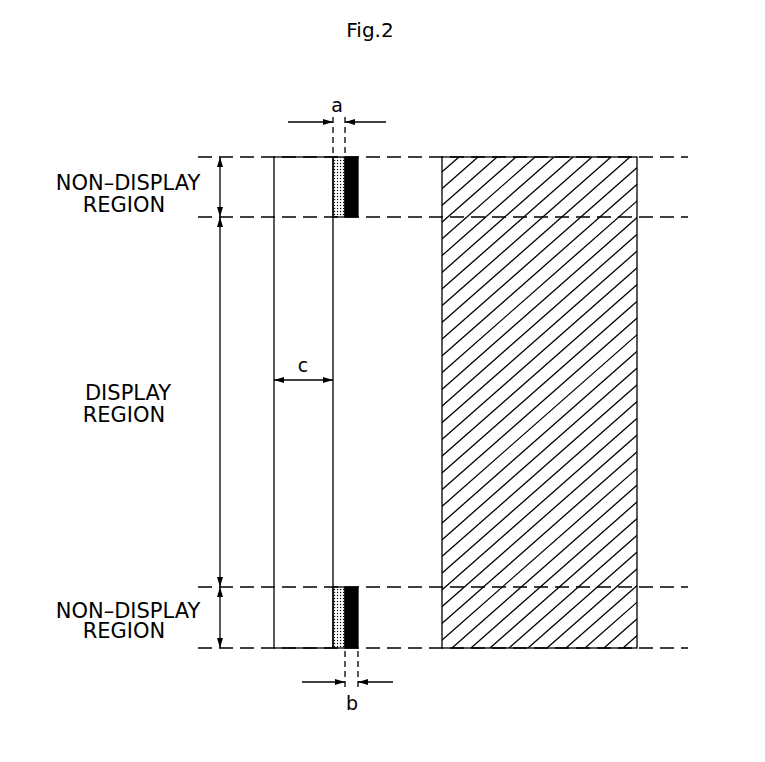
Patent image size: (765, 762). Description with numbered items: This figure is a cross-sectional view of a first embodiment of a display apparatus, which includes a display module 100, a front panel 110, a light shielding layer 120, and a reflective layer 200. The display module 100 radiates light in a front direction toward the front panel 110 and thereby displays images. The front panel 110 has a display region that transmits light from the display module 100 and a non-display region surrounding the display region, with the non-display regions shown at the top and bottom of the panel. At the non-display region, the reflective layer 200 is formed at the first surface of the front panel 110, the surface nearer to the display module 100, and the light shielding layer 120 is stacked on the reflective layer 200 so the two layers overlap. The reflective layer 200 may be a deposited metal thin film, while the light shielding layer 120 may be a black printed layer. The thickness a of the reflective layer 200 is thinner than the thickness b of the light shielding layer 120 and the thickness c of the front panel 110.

The display module 100 is at (540, 165).
The front panel 110 is at (295, 643).
The light shielding layer 120 is at (359, 624).
The reflective layer 200 is at (339, 587).